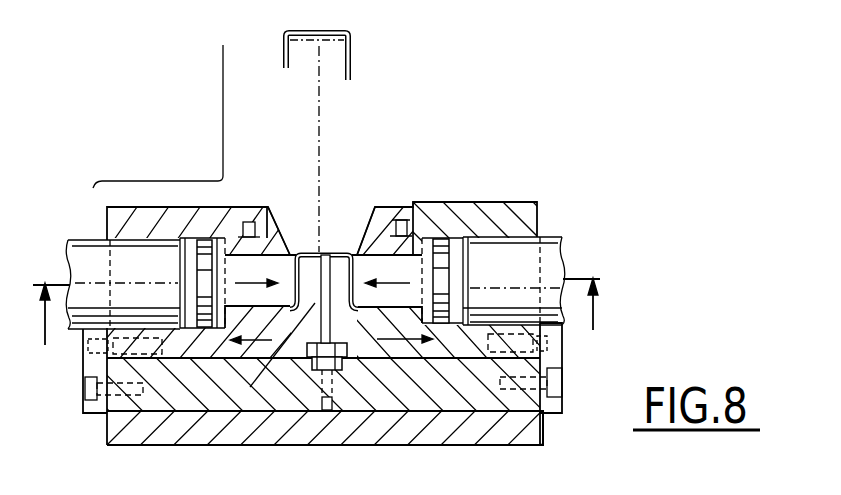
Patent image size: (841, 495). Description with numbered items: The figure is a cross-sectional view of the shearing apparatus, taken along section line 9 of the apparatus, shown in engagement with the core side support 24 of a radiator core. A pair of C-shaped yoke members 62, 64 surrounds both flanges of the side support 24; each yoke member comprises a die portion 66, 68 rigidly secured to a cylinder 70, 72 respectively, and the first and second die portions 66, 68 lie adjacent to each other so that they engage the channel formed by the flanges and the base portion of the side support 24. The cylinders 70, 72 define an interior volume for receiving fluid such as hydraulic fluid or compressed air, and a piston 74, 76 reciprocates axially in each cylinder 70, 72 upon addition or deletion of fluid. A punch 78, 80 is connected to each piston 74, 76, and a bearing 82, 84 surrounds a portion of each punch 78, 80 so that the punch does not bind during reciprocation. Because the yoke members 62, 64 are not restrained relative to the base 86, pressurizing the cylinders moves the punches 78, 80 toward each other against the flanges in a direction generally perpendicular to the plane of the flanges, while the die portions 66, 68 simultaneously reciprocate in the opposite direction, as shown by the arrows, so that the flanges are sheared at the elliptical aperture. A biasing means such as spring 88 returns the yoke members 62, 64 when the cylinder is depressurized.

The section line 9- 9 is at (316, 311).
The side support 24 is at (333, 36).
The C-shaped yoke member 62 is at (180, 350).
The C-shaped yoke member 64 is at (483, 345).
The die portion 66 is at (220, 448).
The die portion 68 is at (335, 305).
The cylinder 70 is at (122, 240).
The cylinder 72 is at (550, 237).
The piston 74 is at (178, 263).
The piston 76 is at (470, 260).
The punch 78 is at (268, 206).
The punch 80 is at (383, 208).
The bearing 82 is at (205, 242).
The bearing 84 is at (442, 243).
The base 86 is at (541, 417).
The spring 88 is at (117, 350).